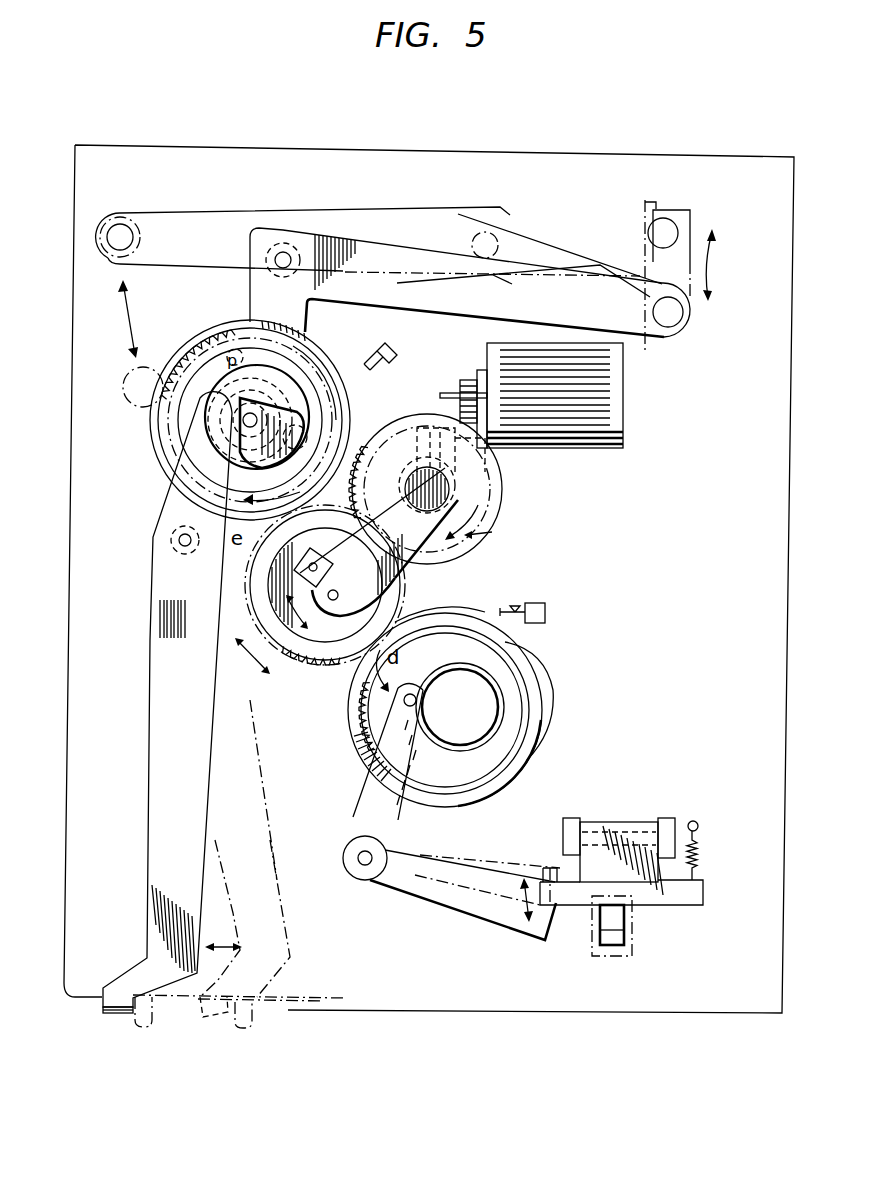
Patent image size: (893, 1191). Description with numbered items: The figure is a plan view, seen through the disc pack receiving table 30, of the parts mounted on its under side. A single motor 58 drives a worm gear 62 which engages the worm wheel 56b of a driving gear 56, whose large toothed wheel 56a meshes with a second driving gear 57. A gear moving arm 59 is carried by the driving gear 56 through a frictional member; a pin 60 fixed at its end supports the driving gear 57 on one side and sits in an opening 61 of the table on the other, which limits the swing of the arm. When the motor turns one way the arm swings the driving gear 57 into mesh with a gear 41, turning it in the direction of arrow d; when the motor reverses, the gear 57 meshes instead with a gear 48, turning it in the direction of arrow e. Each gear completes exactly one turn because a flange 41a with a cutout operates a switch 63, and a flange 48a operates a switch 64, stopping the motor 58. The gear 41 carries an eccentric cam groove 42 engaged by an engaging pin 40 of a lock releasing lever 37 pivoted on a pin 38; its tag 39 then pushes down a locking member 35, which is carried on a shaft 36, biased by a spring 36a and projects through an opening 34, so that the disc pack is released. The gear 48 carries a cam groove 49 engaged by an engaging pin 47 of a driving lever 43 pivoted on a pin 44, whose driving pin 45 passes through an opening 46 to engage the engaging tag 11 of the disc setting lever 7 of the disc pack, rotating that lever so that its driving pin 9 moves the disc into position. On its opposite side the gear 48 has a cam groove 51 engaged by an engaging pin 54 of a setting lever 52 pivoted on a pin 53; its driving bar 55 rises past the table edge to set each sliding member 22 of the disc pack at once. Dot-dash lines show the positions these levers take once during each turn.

The disc setting lever 7 is at (342, 208).
The driving pin 9 is at (116, 224).
The engaging tag 11 is at (682, 212).
The sliding member 22 is at (173, 1002).
The disc pack receiving table 30 is at (712, 1013).
The opening 34 is at (633, 950).
The locking member 35 is at (623, 915).
The shaft 36 is at (618, 826).
The spring 36a is at (700, 860).
The lock releasing lever 37 is at (493, 903).
The pin 38 is at (355, 864).
The tag 39 is at (555, 906).
The engaging pin 40 is at (418, 700).
The gear 41 is at (523, 702).
The flange 41a is at (530, 742).
The cam groove 42 is at (497, 677).
The driving lever 43 is at (455, 326).
The pin 44 is at (283, 251).
The driving pin 45 is at (688, 218).
The opening 46 is at (650, 203).
The engaging pin 47 is at (326, 380).
The gear 48 is at (175, 468).
The flange 48a is at (200, 333).
The cam groove 49 is at (233, 350).
The cam groove 51 is at (318, 436).
The setting lever 52 is at (215, 868).
The pin 53 is at (178, 540).
The engaging pin 54 is at (176, 446).
The driving bar 55 is at (113, 1014).
The driving gear 56 is at (492, 532).
The large toothed wheel 56a is at (430, 393).
The worm wheel 56b is at (500, 491).
The driving gear 57 is at (262, 618).
The motor 58 is at (623, 415).
The gear moving arm 59 is at (452, 555).
The pin 60 is at (336, 642).
The opening 61 is at (345, 592).
The worm gear 62 is at (431, 450).
The switch 63 is at (545, 612).
The switch 64 is at (390, 348).